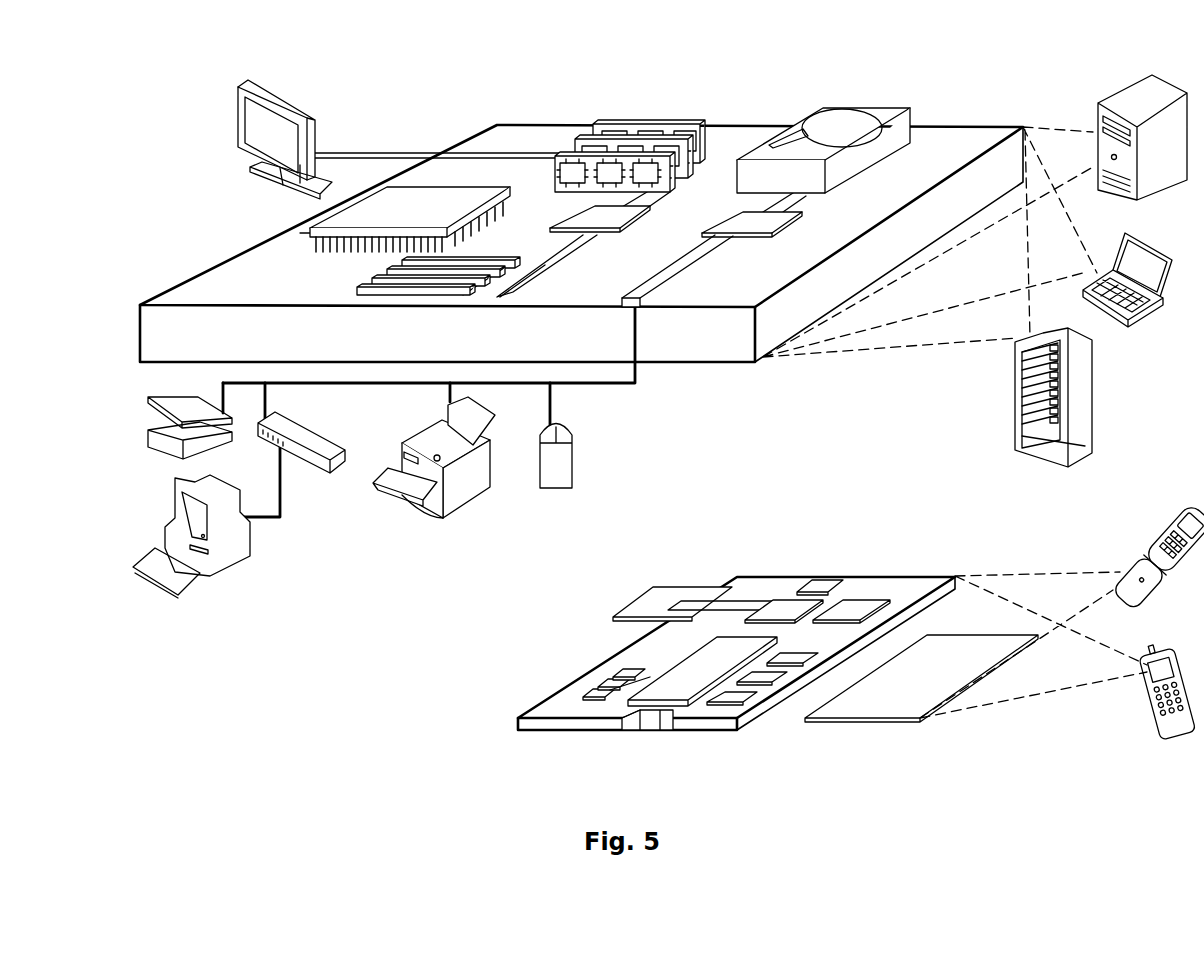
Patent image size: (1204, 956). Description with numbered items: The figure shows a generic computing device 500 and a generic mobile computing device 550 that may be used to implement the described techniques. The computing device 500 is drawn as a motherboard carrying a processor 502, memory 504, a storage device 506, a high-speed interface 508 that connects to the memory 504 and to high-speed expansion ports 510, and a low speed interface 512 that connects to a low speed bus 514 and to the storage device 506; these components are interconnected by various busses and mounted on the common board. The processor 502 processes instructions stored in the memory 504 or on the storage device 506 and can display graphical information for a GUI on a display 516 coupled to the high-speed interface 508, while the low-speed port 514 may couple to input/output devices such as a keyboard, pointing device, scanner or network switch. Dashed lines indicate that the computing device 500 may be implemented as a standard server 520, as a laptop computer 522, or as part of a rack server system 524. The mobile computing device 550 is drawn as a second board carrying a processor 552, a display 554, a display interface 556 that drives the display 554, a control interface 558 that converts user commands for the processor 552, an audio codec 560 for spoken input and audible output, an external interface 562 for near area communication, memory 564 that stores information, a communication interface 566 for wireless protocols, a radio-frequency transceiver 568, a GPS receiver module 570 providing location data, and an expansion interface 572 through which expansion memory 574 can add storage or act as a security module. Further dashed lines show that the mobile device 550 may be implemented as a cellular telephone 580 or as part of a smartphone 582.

The computing device 500 is at (425, 102).
The processor 502 is at (303, 235).
The memory 504 is at (603, 123).
The storage device 506 is at (813, 107).
The high-speed interface 508 is at (582, 218).
The high-speed expansion ports 510 is at (377, 280).
The low speed interface 512 is at (750, 222).
The low speed bus 514 is at (642, 308).
The display 516 is at (238, 87).
The standard server 520 is at (1097, 113).
The laptop computer 522 is at (1122, 240).
The rack server system 524 is at (1014, 420).
The mobile computing device 550 is at (720, 555).
The processor 552 is at (672, 712).
The display 554 is at (918, 720).
The display interface 556 is at (748, 713).
The control interface 558 is at (787, 680).
The audio codec 560 is at (800, 660).
The external interface 562 is at (643, 720).
The memory 564 is at (600, 683).
The communication interface 566 is at (780, 607).
The transceiver 568 is at (853, 608).
The GPS receiver module 570 is at (818, 577).
The expansion interface 572 is at (717, 588).
The expansion memory 574 is at (653, 587).
The cellular telephone 580 is at (1164, 520).
The smartphone 582 is at (1153, 650).